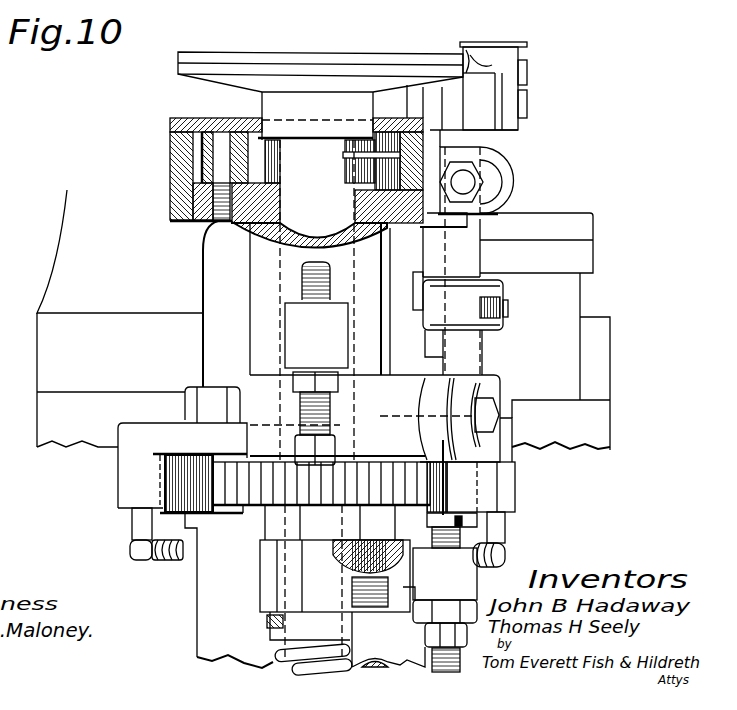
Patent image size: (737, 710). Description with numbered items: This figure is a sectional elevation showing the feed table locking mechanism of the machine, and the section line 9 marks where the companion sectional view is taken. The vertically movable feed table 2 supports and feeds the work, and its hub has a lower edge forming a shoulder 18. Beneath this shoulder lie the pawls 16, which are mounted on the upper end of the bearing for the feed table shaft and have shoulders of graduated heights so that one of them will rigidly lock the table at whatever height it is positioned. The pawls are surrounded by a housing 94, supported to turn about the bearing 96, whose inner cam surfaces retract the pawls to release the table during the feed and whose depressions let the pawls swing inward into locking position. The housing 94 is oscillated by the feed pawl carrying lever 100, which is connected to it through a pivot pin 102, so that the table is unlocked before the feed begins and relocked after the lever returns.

The feed table 2 is at (295, 59).
The section line 9— 9 is at (160, 127).
The pawls 16 is at (353, 180).
The shoulder 18 is at (302, 137).
The housing 94 is at (175, 157).
The bearing 96 is at (193, 221).
The feed pawl carrying lever 100 is at (528, 366).
The pivot pin 102 is at (472, 343).